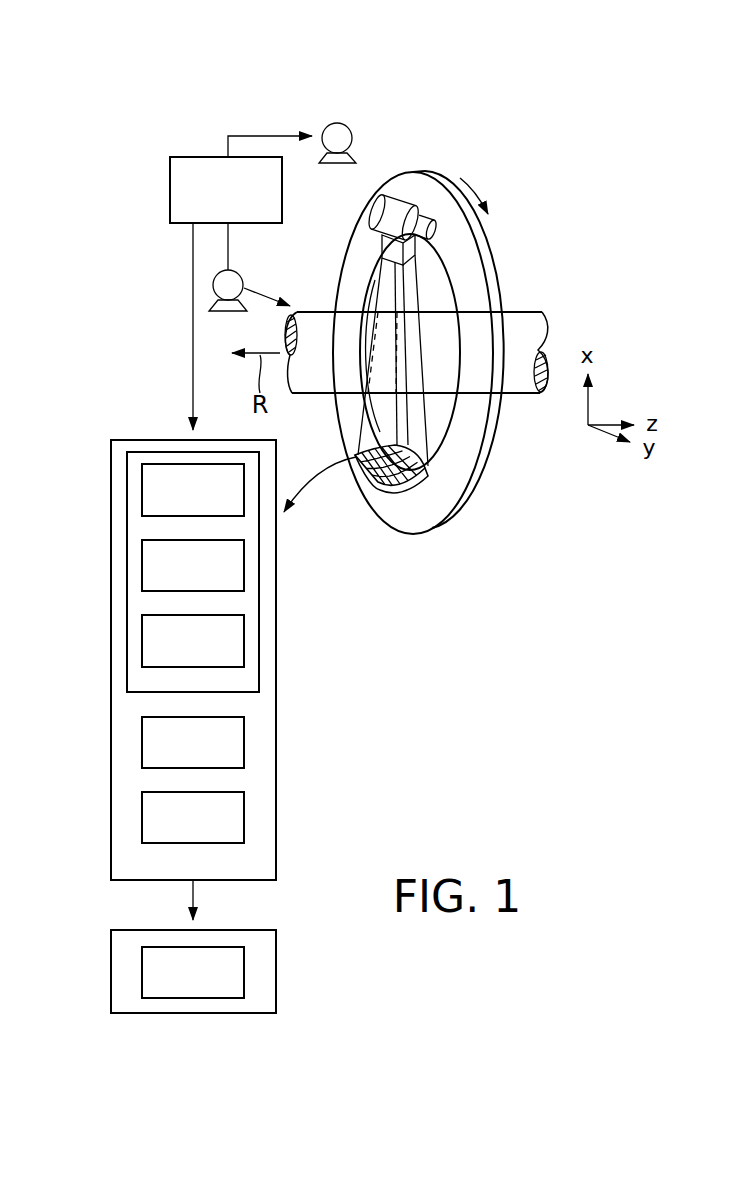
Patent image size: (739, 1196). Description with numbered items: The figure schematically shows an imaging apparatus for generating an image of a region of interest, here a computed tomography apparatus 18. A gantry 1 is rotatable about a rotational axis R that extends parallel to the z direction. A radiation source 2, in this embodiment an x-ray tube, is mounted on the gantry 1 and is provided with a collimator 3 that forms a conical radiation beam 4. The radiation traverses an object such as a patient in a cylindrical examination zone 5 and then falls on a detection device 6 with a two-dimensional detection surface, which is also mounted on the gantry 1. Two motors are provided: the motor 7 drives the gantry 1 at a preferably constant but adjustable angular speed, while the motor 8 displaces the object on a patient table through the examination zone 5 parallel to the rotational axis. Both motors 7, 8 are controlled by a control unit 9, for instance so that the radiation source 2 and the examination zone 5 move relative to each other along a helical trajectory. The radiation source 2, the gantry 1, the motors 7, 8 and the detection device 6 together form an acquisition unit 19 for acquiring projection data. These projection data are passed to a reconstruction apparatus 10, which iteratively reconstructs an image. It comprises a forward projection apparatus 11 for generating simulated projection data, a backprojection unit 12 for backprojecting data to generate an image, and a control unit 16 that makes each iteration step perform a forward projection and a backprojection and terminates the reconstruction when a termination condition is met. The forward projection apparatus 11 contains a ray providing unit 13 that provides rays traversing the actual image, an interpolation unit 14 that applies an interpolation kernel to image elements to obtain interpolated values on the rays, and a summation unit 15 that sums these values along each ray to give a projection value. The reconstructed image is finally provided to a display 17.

The gantry 1 is at (460, 473).
The radiation source 2 is at (395, 203).
The collimator 3 is at (416, 252).
The radiation beam 4 is at (408, 433).
The examination zone 5 is at (315, 312).
The detection device 6 is at (385, 486).
The motor 7 is at (350, 122).
The motor 8 is at (244, 280).
The control unit 9 is at (183, 157).
The reconstruction apparatus 10 is at (278, 603).
The forward projection apparatus 11 is at (127, 522).
The backprojection unit 12 is at (142, 744).
The ray providing unit 13 is at (142, 490).
The interpolation unit 14 is at (142, 566).
The summation unit 15 is at (142, 646).
The control unit 16 is at (142, 817).
The display 17 is at (111, 975).
The computed tomography apparatus 18 is at (468, 82).
The acquisition unit 19 is at (526, 186).